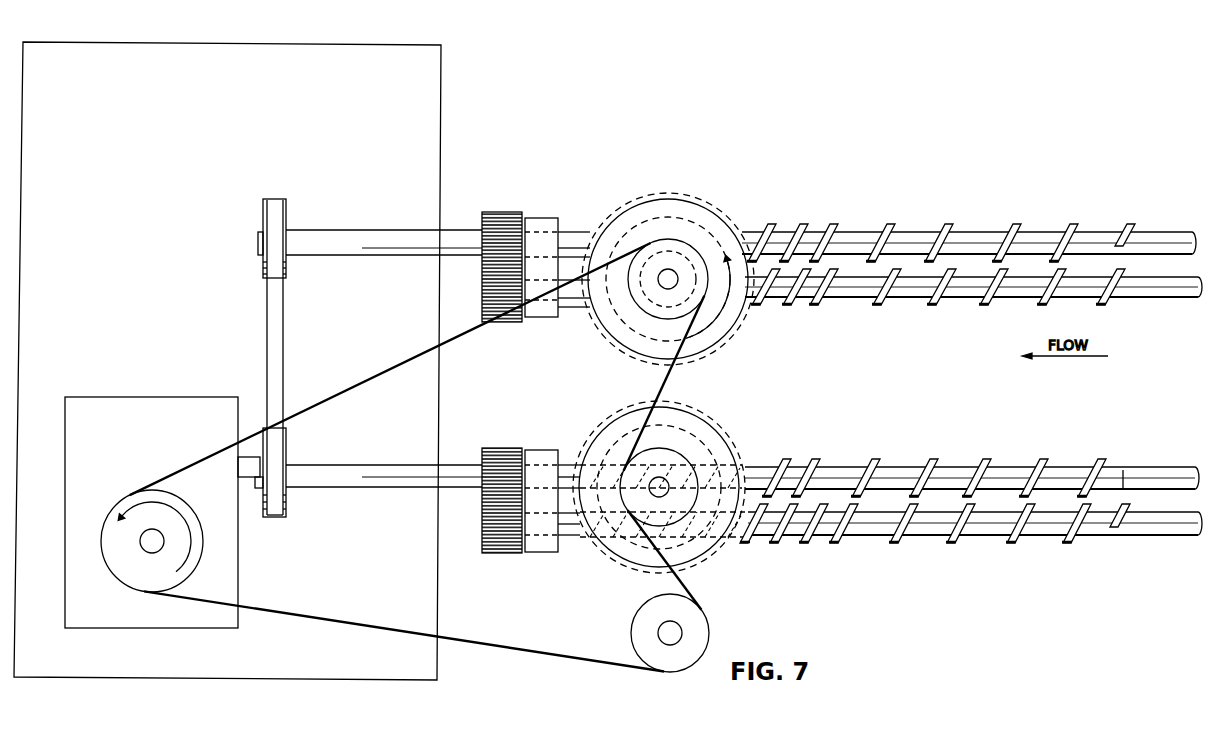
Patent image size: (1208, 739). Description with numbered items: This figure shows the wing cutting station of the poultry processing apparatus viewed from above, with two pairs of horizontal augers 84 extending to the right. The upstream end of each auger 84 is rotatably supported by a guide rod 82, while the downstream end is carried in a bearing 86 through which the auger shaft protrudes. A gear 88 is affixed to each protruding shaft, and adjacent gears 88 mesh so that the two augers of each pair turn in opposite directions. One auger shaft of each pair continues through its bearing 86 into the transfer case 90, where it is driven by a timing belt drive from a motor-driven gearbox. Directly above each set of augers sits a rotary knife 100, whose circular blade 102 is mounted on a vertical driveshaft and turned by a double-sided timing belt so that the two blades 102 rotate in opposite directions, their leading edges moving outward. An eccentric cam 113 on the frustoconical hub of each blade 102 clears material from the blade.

The guide rod 82 is at (1147, 473).
The horizontal auger 84 is at (980, 232).
The bearing 86 is at (548, 318).
The gear 88 is at (505, 212).
The transfer case 90 is at (354, 355).
The rotary knife 100 is at (714, 206).
The circular blade 102 is at (722, 336).
The eccentric cam 113 is at (666, 314).